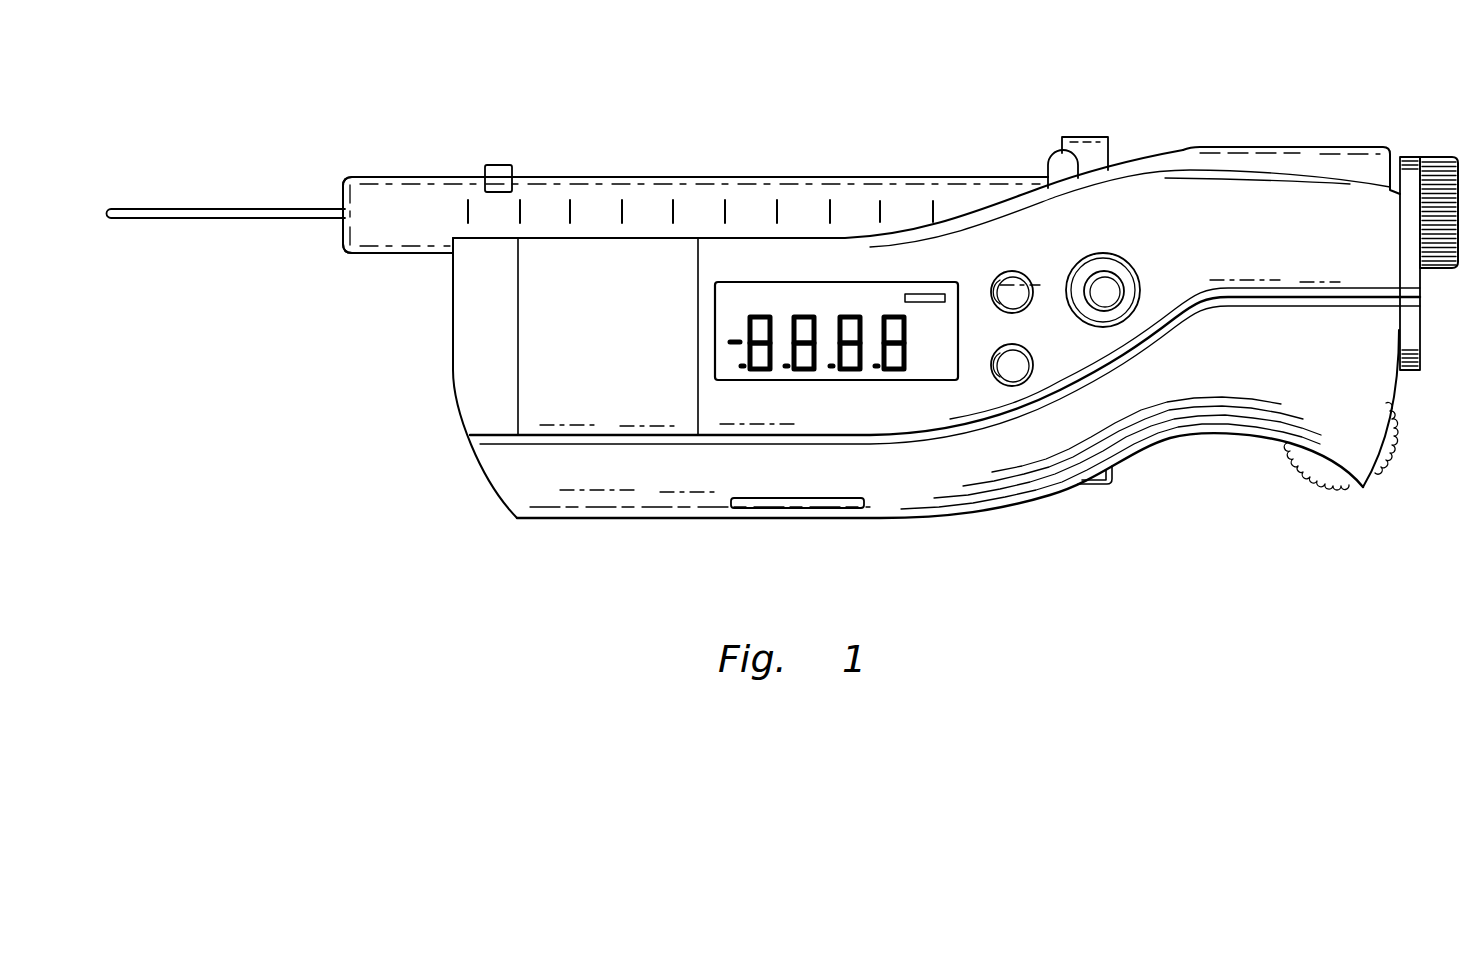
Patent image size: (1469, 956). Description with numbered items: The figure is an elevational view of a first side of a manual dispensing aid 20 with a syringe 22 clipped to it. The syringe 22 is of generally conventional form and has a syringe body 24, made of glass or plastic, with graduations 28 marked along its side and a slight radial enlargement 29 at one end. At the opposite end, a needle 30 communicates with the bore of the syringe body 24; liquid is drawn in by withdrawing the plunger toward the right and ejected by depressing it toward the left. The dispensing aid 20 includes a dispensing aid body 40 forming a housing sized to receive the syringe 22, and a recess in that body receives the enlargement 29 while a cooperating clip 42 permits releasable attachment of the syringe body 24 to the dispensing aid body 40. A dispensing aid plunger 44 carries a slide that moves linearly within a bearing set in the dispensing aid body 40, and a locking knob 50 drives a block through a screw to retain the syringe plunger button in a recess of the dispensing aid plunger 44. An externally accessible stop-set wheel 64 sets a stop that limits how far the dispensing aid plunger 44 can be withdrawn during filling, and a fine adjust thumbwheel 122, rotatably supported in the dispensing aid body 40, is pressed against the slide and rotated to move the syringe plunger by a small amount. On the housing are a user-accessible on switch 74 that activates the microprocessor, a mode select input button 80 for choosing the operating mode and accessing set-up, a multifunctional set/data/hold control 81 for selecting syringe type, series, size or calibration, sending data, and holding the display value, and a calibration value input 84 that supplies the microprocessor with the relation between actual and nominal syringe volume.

The manual dispensing aid 20 is at (415, 400).
The syringe 22 is at (432, 177).
The syringe body 24 is at (375, 176).
The graduations 28 is at (673, 215).
The radial enlargement 29 is at (1048, 160).
The needle 30 is at (272, 220).
The dispensing aid body 40 is at (453, 315).
The clip 42 is at (1090, 137).
The dispensing aid plunger 44 is at (1330, 147).
The locking knob 50 is at (1445, 157).
The stop-set wheel 64 is at (1090, 486).
The on switch 74 is at (1123, 277).
The mode select input button 80 is at (1000, 275).
The set/data/hold control 81 is at (1034, 361).
The calibration value input 84 is at (805, 508).
The fine adjust thumbwheel 122 is at (1335, 485).